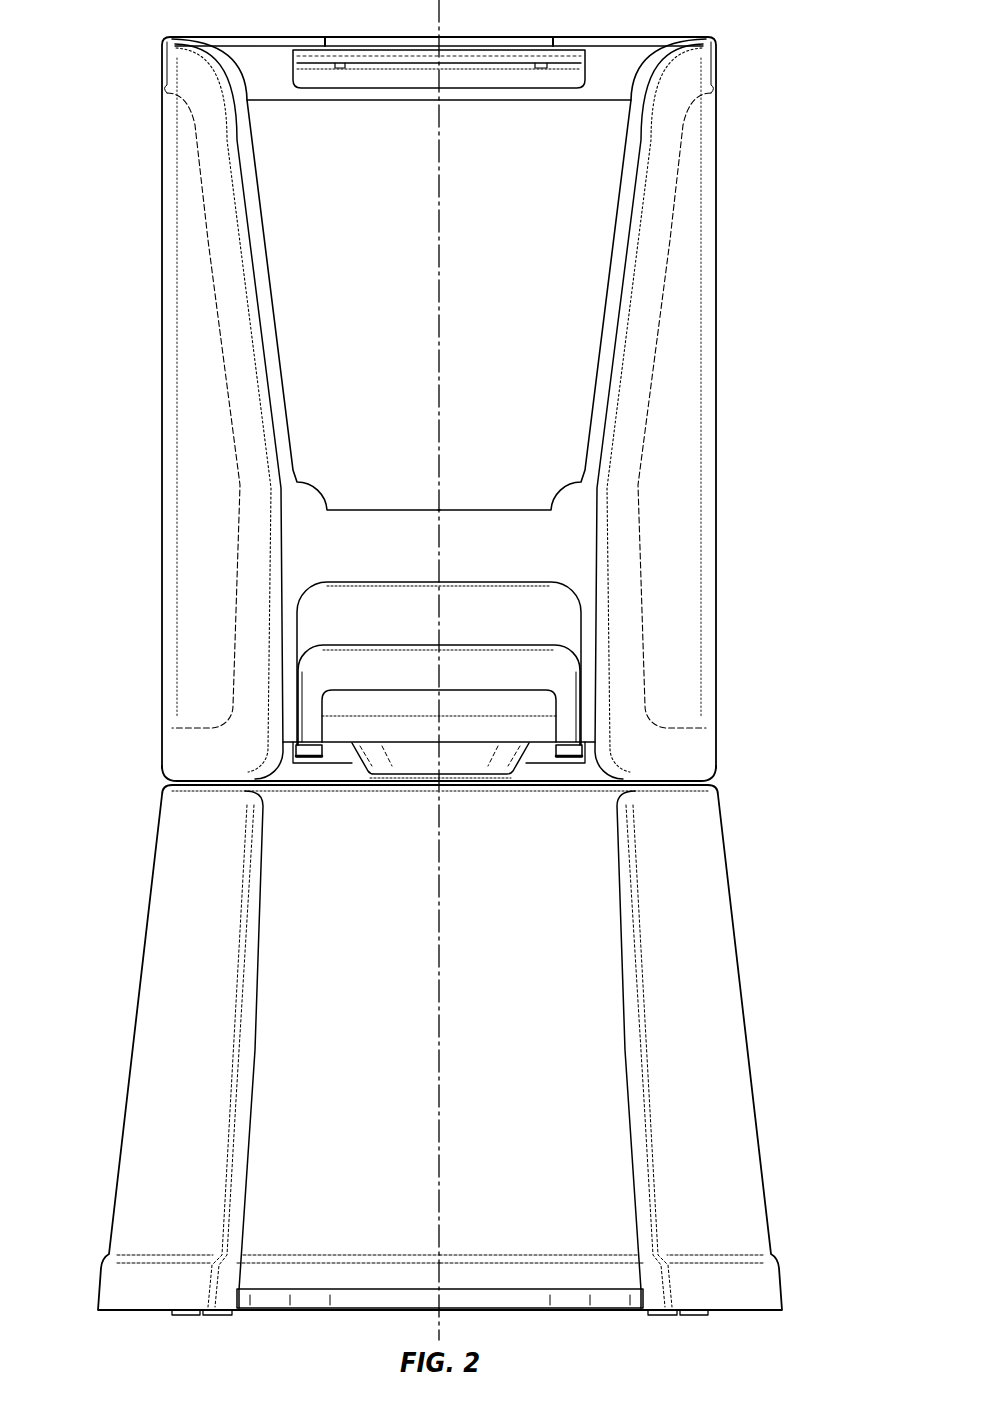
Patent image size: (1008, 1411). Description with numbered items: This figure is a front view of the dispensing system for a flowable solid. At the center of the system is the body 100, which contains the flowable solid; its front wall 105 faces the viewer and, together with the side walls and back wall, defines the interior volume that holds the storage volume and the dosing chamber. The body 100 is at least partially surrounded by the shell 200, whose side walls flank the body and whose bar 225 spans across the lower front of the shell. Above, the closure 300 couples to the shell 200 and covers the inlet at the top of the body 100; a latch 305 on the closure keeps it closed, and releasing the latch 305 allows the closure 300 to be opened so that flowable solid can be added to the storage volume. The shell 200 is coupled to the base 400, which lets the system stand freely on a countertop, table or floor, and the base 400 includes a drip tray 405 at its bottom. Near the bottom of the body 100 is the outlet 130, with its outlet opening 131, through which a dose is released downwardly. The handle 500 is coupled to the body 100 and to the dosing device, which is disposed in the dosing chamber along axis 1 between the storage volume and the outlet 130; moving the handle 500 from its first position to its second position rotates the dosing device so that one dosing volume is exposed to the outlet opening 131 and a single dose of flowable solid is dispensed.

The axis 1 is at (413, 670).
The body 100 is at (395, 453).
The front wall 105 is at (378, 316).
The outlet 130 is at (405, 762).
The outlet opening 131 is at (468, 792).
The shell 200 is at (180, 393).
The bar 225 is at (545, 548).
The closure 300 is at (419, 82).
The latch 305 is at (373, 55).
The base 400 is at (413, 1050).
The drip tray 405 is at (313, 1298).
The handle 500 is at (525, 677).